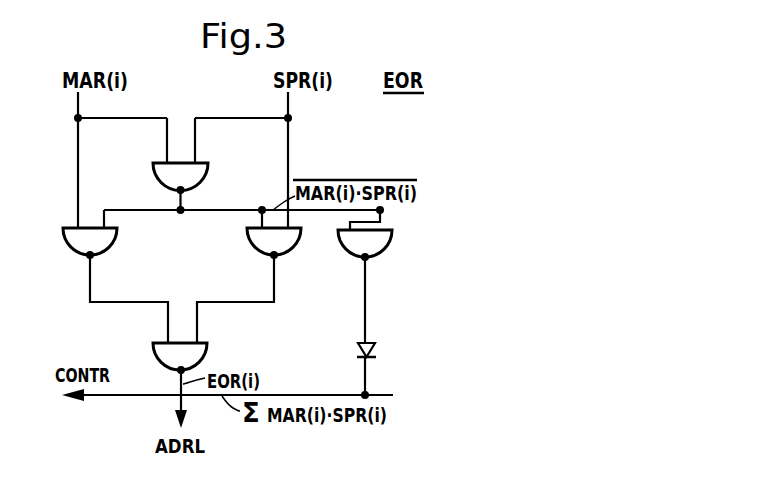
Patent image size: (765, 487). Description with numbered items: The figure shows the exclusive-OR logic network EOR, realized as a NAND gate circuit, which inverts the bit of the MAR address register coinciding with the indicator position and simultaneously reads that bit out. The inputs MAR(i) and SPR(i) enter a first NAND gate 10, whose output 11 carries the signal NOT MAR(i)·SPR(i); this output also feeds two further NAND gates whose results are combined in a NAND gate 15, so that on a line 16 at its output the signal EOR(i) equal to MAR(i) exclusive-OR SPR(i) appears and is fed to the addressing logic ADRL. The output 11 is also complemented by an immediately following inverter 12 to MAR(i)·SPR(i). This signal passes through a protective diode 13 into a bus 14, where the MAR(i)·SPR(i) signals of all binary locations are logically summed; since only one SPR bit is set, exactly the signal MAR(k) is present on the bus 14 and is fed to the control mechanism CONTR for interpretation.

The first NAND gate 10 is at (206, 176).
The output of the first NAND gate 11 is at (183, 212).
The inverter 12 is at (386, 240).
The protective diode 13 is at (377, 350).
The bus 14 is at (380, 392).
The NAND gate 15 is at (199, 354).
The line 16 is at (183, 383).